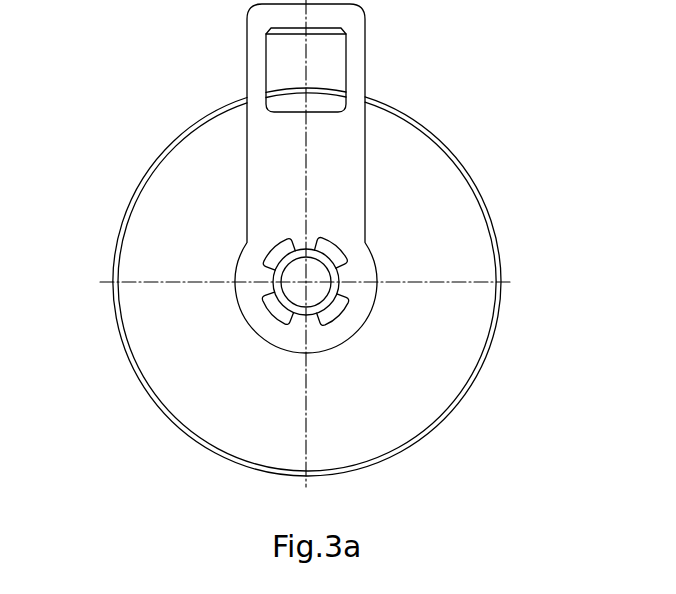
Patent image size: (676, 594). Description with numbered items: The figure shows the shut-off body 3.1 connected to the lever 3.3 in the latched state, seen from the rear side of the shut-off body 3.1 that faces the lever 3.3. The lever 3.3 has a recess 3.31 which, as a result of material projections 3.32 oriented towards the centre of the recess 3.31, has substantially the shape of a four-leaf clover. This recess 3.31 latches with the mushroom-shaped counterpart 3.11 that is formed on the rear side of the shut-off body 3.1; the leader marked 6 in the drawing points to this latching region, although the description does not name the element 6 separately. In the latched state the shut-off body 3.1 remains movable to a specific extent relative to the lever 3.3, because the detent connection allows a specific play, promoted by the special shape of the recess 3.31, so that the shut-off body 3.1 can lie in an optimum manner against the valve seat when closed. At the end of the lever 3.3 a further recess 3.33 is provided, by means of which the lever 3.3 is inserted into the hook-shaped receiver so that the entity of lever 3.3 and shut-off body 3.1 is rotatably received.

The shut-off body 3.1 is at (487, 205).
The lever 3.3 is at (365, 54).
The recess 3.33 is at (277, 57).
The recess 3.31 is at (267, 258).
The material projections 3.32 is at (328, 257).
The counterpart 3.11 is at (315, 290).
The shaft bore 6 is at (276, 310).